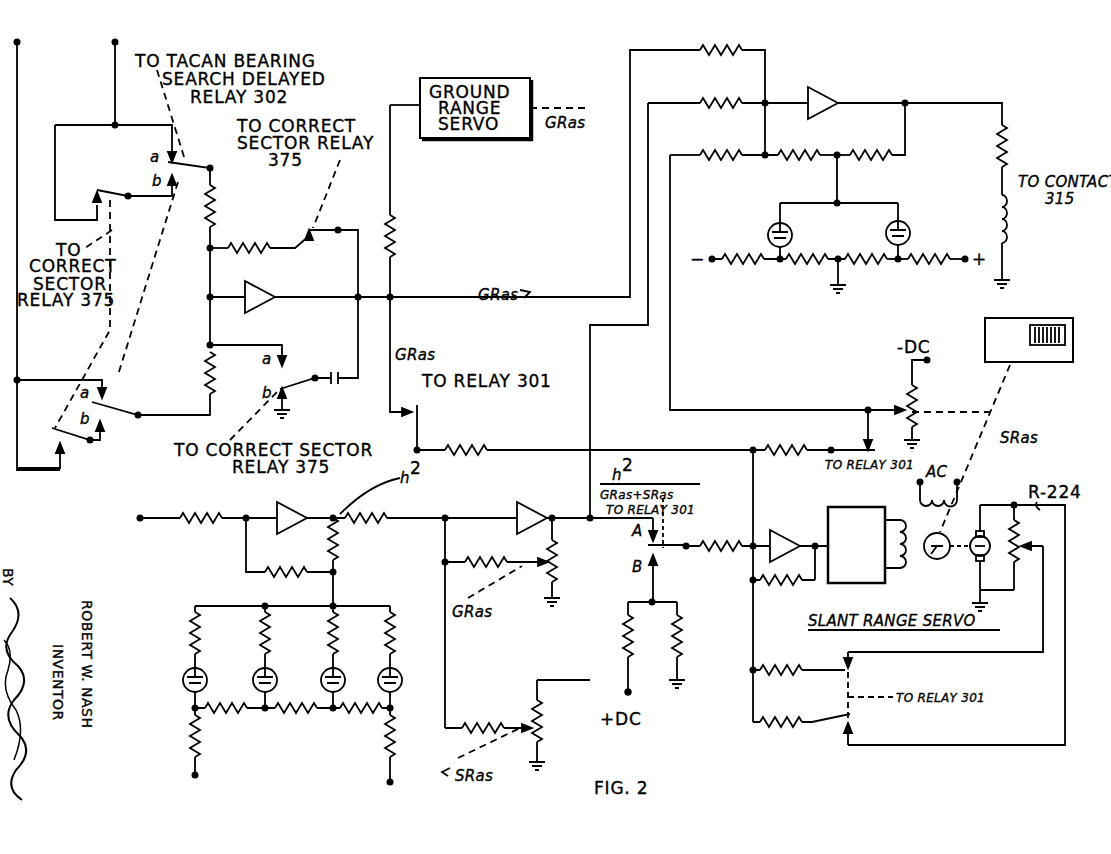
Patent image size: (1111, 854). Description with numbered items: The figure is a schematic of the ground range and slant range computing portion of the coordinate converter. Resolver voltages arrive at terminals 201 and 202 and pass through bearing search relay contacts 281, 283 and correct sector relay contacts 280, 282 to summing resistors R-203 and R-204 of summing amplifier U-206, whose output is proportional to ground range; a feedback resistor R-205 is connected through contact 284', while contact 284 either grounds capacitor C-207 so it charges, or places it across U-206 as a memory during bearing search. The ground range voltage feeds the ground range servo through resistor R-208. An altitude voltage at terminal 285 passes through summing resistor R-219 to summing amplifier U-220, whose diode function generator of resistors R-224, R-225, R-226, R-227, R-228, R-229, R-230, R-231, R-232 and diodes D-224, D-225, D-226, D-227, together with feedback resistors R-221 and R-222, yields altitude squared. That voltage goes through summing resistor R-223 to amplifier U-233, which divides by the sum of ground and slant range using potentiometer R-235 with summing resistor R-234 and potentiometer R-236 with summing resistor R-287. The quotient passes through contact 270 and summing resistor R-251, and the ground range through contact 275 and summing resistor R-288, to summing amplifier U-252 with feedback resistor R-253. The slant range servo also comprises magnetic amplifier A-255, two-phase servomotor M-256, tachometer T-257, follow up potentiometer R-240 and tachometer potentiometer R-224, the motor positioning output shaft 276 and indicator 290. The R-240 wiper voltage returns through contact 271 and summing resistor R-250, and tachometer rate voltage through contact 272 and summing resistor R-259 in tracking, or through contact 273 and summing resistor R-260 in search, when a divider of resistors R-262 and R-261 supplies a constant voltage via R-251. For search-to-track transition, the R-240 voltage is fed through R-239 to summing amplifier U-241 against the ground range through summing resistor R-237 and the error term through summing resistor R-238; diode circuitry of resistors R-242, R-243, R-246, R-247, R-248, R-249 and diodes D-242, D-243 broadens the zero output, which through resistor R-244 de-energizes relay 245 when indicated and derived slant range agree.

The input terminal 201 is at (30, 240).
The input terminal 202 is at (113, 70).
The correct sector relay contact 280 is at (126, 184).
The bearing search relay contact 281 is at (205, 160).
The correct sector relay contact 282 is at (70, 445).
The bearing search relay contact 283 is at (108, 408).
The relay contact 284 is at (305, 397).
The contact point 284' is at (321, 236).
The input terminal 285 is at (144, 520).
The relay contact 270 is at (646, 546).
The relay contact 271 is at (856, 444).
The relay contact 272 is at (859, 678).
The relay contact 273 is at (868, 720).
The relay contact 275 is at (420, 420).
The output shaft 276 is at (1018, 392).
The slant range indicator 290 is at (1040, 362).
The relay 245 is at (997, 221).
The summing resistor R-203 is at (222, 206).
The summing resistor R-204 is at (198, 378).
The feedback resistor R-205 is at (284, 236).
The summing amplifier U-206 is at (268, 305).
The capacitor C-207 is at (344, 356).
The resistor R-208 is at (398, 248).
The summing resistor R-219 is at (235, 504).
The summing amplifier U-220 is at (308, 502).
The feedback resistor R-221 is at (318, 559).
The feedback resistor R-222 is at (353, 548).
The summing resistor R-223 is at (402, 504).
The resistor R-224 is at (183, 644).
The resistor R-225 is at (253, 644).
The resistor R-226 is at (321, 644).
The resistor R-227 is at (378, 644).
The diode D-224 is at (183, 682).
The diode D-225 is at (253, 682).
The diode D-226 is at (321, 682).
The diode D-227 is at (378, 682).
The resistor R-228 is at (183, 742).
The resistor R-229 is at (256, 712).
The resistor R-230 is at (324, 712).
The resistor R-231 is at (384, 716).
The resistor R-232 is at (378, 760).
The summing amplifier U-233 is at (548, 495).
The summing resistor R-234 is at (518, 548).
The potentiometer R-235 is at (548, 592).
The potentiometer R-236 is at (548, 732).
The resistor R-287 is at (515, 714).
The summing resistor R-288 is at (500, 434).
The summing resistor R-237 is at (731, 90).
The summing resistor R-238 is at (752, 93).
The resistor R-239 is at (734, 145).
The summing amplifier U-241 is at (835, 88).
The resistor R-242 is at (812, 144).
The resistor R-243 is at (875, 131).
The resistor R-244 is at (972, 160).
The diode D-242 is at (751, 227).
The diode D-243 is at (876, 227).
The resistor R-246 is at (745, 249).
The resistor R-247 is at (811, 249).
The resistor R-248 is at (874, 249).
The resistor R-249 is at (937, 249).
The follow up potentiometer R-240 is at (920, 400).
The summing resistor R-250 is at (813, 440).
The summing resistor R-251 is at (727, 532).
The summing amplifier U-252 is at (800, 520).
The feedback resistor R-253 is at (783, 590).
The magnetic amplifier A-255 is at (884, 492).
The two phase A.C. servomotor M-256 is at (945, 557).
The tachometer T-257 is at (964, 534).
The summing resistor R-259 is at (816, 654).
The summing resistor R-260 is at (820, 704).
The resistor R-261 is at (686, 628).
The resistor R-262 is at (640, 625).